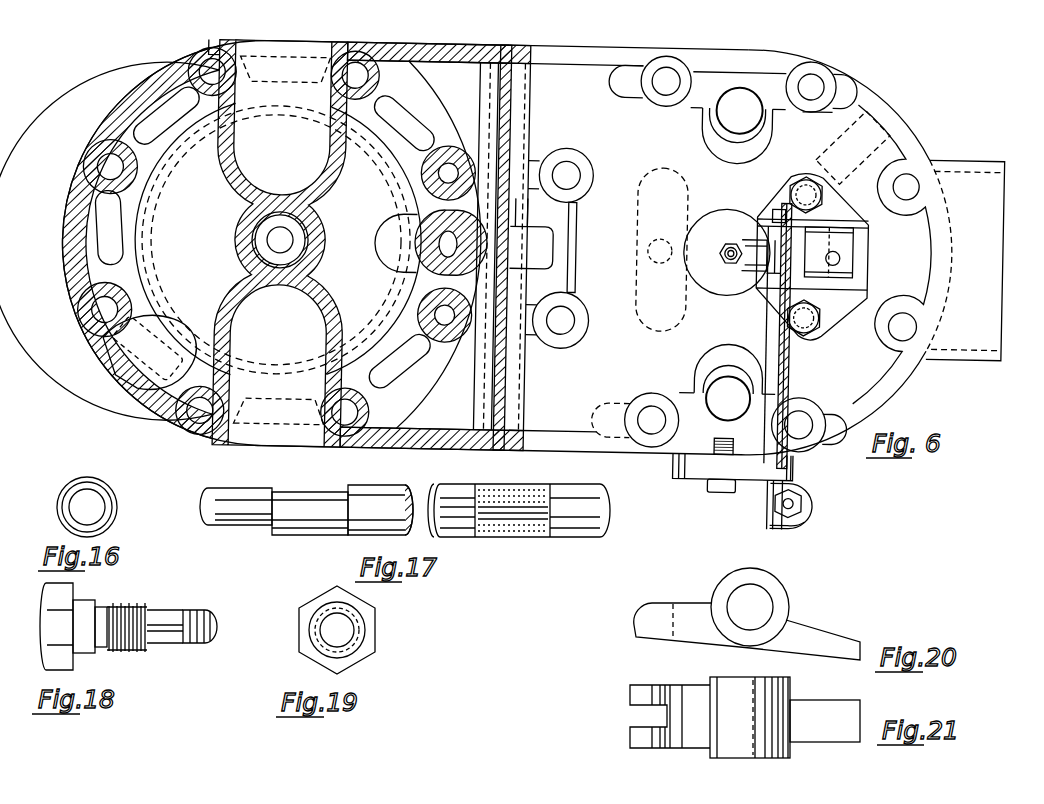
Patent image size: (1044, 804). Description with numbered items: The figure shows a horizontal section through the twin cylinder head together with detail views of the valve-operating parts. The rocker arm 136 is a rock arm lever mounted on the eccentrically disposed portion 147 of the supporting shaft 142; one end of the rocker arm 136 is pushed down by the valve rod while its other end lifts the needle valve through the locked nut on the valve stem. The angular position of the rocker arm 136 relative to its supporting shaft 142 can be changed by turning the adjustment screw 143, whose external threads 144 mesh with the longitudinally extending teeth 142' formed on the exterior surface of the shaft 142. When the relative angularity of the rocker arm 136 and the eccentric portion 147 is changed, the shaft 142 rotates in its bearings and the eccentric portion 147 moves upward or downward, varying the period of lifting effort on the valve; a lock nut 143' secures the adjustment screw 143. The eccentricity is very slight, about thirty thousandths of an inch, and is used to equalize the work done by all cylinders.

In FIG. 6, the rocker arm 136 is at (758, 260).
In FIG. 20, the rocker arm 136 is at (783, 600).
In FIG. 21, the rocker arm 136 is at (755, 758).
In FIG. 6, the eccentric supporting shaft 142 is at (790, 336).
In FIG. 16, the eccentric supporting shaft 142 is at (105, 507).
In FIG. 17, the eccentric supporting shaft 142 is at (519, 527).
In FIG. 17, the longitudinally extending teeth 142' is at (512, 526).
In FIG. 6, the adjustment screw 143 is at (809, 501).
In FIG. 18, the adjustment screw 143 is at (128, 629).
In FIG. 19, the adjustment screw 143 is at (355, 630).
In FIG. 6, the lock nut 143' is at (810, 518).
In FIG. 18, the external threads 144 is at (137, 652).
In FIG. 16, the eccentrically disposed portion 147 is at (105, 514).
In FIG. 17, the eccentrically disposed portion 147 is at (315, 537).